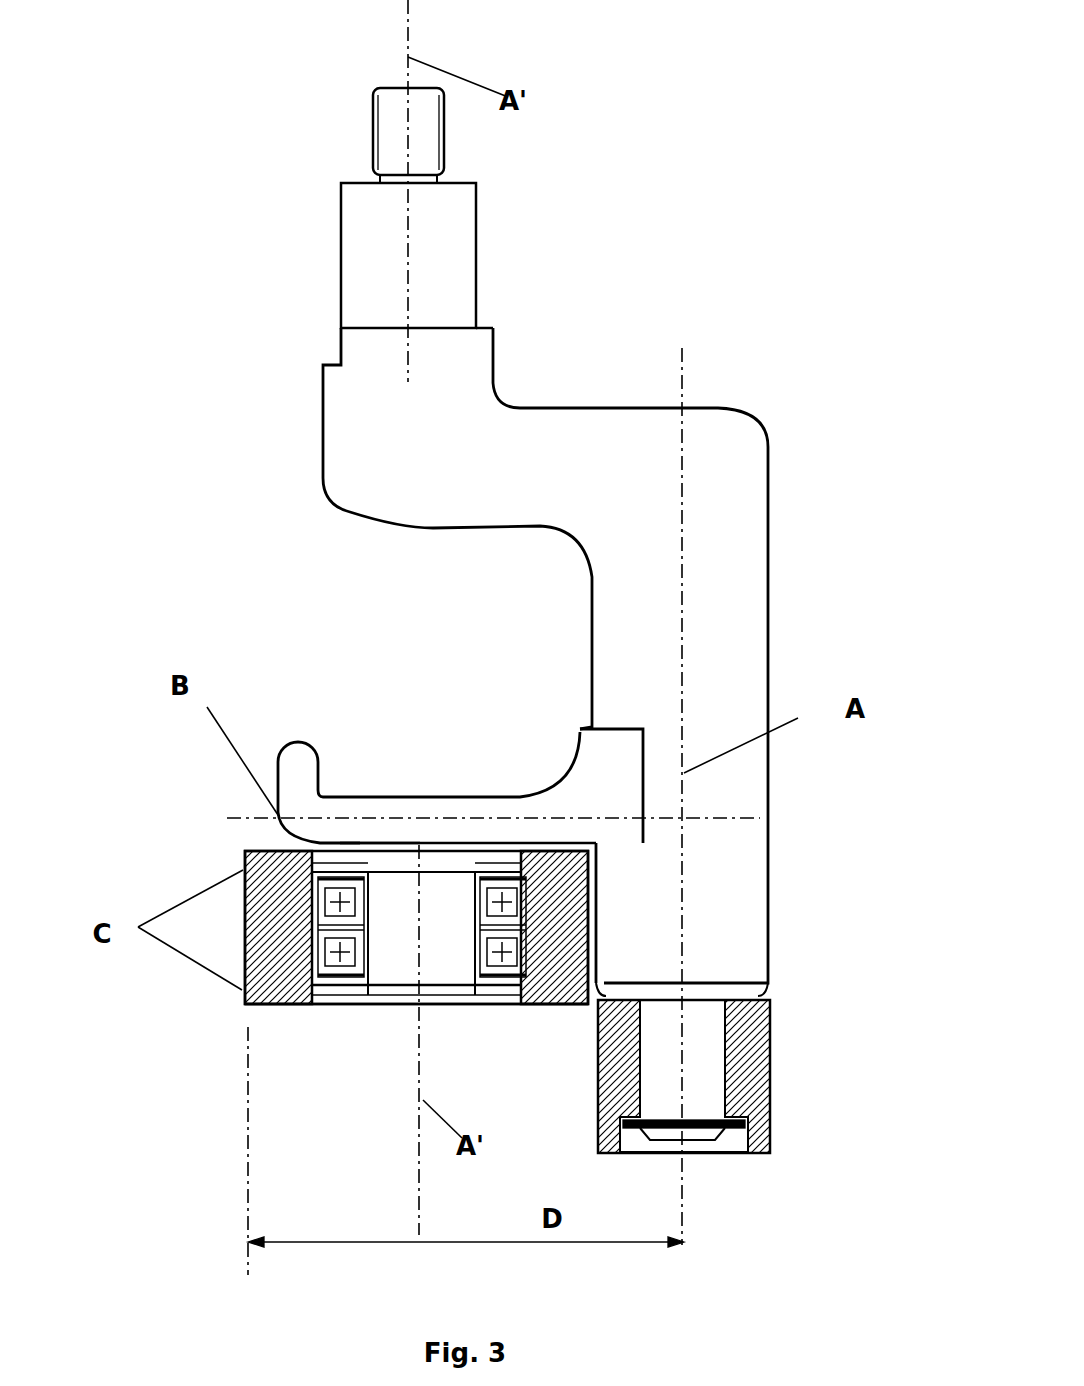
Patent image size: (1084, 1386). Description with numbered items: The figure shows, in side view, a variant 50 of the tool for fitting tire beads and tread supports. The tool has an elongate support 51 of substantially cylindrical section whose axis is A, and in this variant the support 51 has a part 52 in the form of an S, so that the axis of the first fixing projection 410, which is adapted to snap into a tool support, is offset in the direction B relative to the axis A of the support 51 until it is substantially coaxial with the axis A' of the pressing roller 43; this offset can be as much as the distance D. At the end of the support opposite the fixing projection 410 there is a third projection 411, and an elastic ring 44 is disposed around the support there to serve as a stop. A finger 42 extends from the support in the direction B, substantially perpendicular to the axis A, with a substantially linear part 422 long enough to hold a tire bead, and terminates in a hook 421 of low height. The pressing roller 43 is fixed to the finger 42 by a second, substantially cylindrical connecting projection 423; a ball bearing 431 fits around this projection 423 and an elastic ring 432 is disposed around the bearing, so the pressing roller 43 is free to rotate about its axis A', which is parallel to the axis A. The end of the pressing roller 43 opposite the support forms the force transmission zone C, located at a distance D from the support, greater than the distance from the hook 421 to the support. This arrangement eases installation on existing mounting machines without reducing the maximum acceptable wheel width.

The variant of the tool 50 is at (232, 534).
The first fixing projection 410 is at (390, 134).
The S-shaped part 52 is at (620, 427).
The support 51 is at (728, 873).
The finger 42 is at (494, 806).
The hook 421 is at (302, 777).
The linear part 422 is at (406, 810).
The pressing roller 43 is at (243, 858).
The ball bearing 431 is at (363, 1023).
The second connecting projection 423 is at (398, 927).
The elastic ring 432 is at (245, 1005).
The elastic ring stop 44 is at (760, 1057).
The third projection 411 is at (705, 1087).